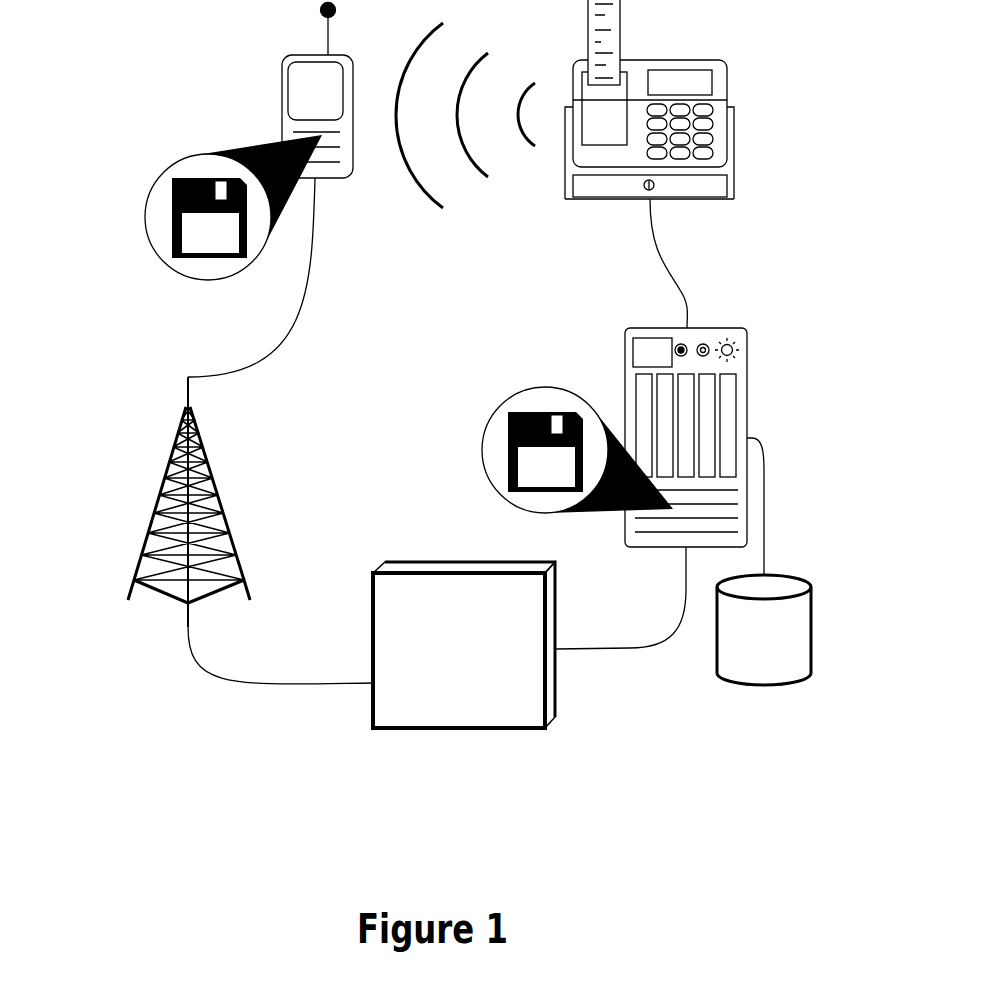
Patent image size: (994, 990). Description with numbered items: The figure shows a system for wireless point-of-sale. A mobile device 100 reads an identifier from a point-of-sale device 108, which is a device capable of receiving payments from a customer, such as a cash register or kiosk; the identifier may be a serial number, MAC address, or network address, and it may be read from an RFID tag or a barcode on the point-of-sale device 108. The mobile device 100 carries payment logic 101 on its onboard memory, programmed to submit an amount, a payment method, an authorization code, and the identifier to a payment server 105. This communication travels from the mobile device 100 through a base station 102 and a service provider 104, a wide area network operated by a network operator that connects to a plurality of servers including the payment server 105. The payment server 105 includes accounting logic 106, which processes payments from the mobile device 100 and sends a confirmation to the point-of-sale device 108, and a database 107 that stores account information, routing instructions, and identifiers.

The mobile device 100 is at (282, 115).
The payment logic 101 is at (172, 217).
The base station 102 is at (212, 495).
The service provider 104 is at (465, 561).
The payment server 105 is at (624, 375).
The accounting logic 106 is at (505, 450).
The database 107 is at (763, 682).
The point-of-sale device 108 is at (648, 60).